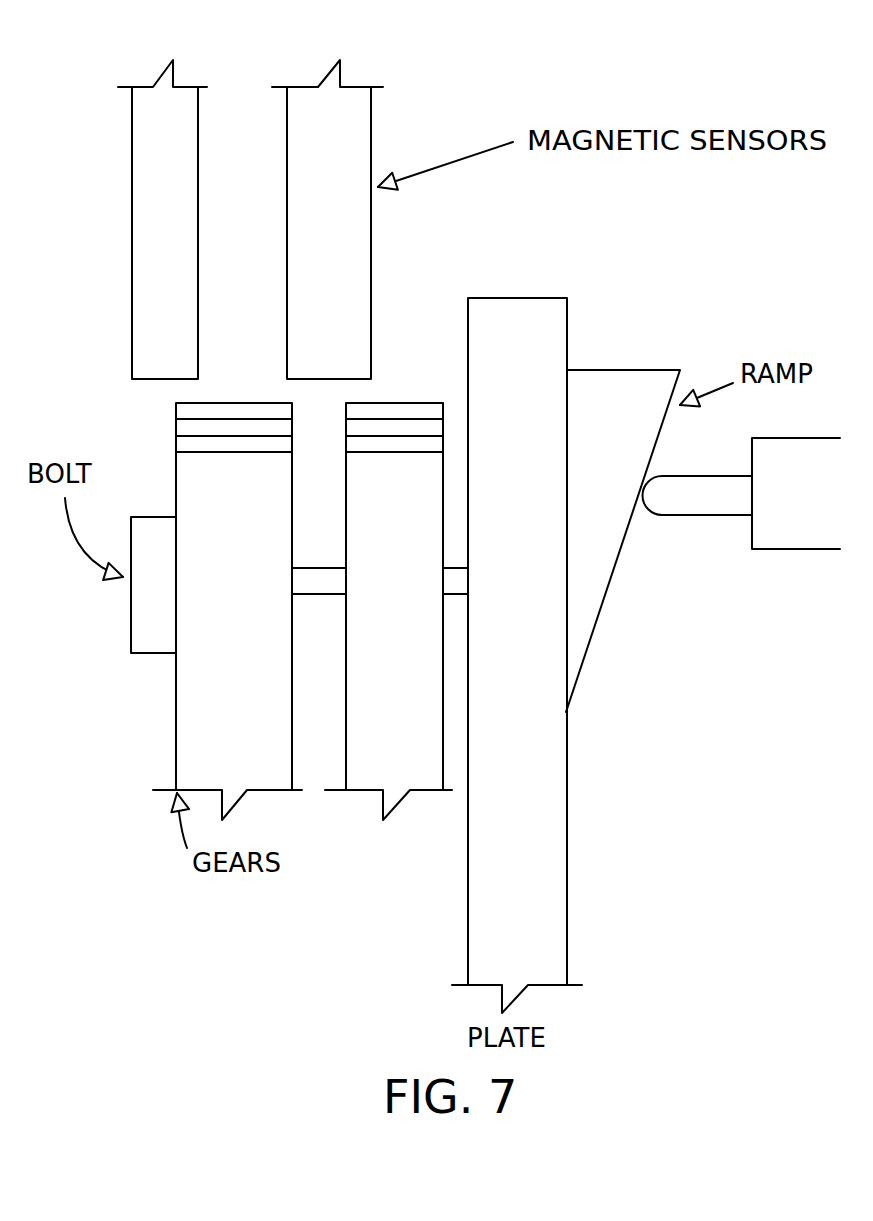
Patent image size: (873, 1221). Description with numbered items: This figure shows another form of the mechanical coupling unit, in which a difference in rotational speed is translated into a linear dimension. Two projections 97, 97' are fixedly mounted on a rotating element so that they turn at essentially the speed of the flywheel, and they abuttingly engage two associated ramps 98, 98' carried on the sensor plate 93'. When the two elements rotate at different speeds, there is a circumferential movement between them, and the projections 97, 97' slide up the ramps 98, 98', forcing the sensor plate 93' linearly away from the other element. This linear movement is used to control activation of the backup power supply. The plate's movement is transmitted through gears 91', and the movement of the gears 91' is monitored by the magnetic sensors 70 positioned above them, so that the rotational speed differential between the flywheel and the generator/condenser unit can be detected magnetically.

The magnetic sensors 70 is at (287, 135).
The sensor plate 93' is at (561, 641).
The ramp 98 is at (692, 499).
The ramp 98' is at (692, 499).
The projection 97 is at (742, 558).
The projection 97' is at (742, 558).
The gears 91' is at (310, 686).